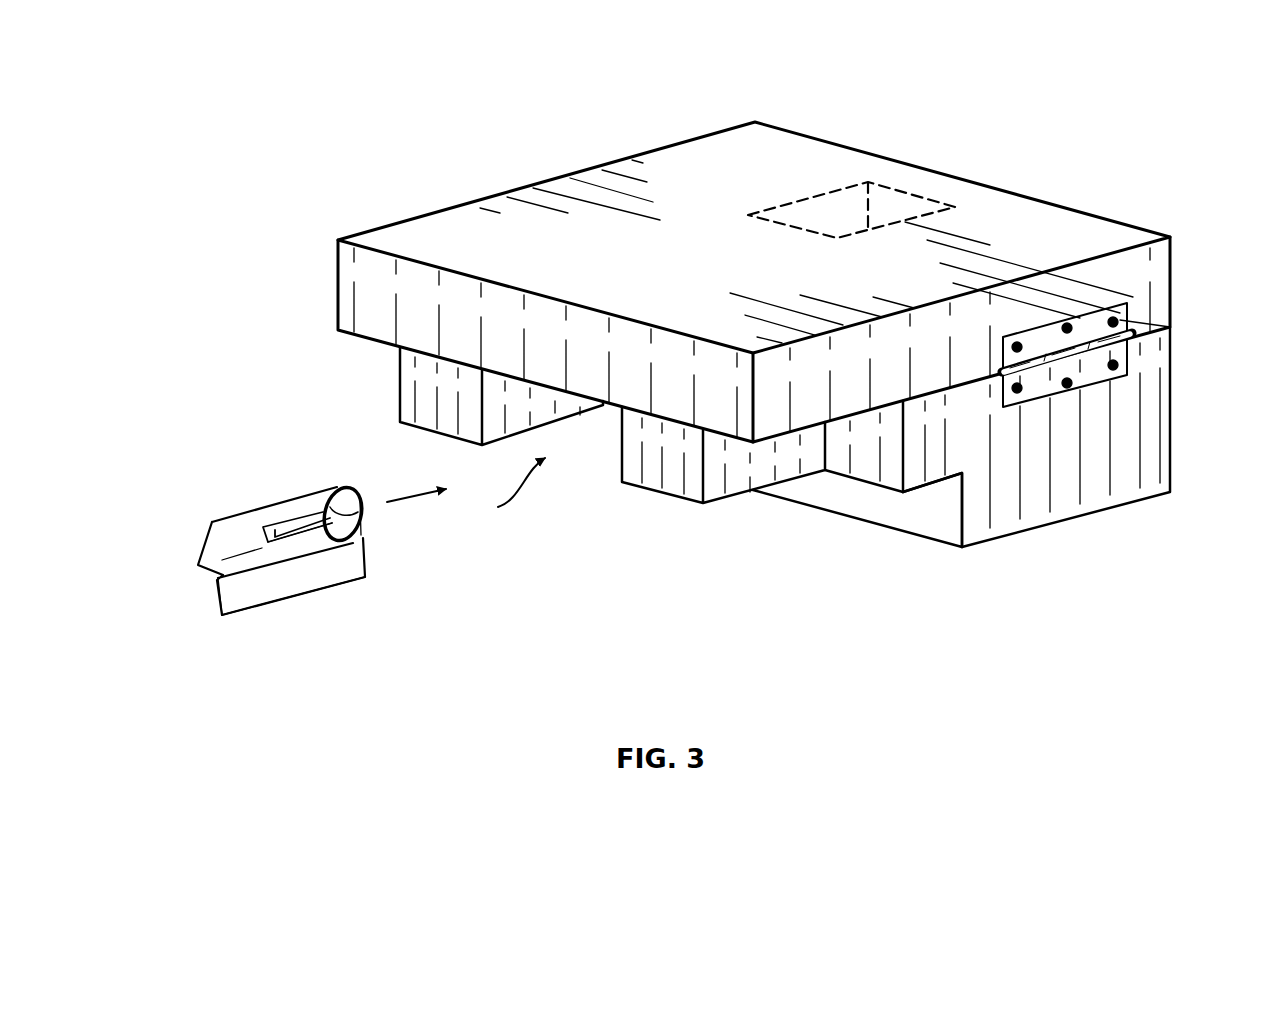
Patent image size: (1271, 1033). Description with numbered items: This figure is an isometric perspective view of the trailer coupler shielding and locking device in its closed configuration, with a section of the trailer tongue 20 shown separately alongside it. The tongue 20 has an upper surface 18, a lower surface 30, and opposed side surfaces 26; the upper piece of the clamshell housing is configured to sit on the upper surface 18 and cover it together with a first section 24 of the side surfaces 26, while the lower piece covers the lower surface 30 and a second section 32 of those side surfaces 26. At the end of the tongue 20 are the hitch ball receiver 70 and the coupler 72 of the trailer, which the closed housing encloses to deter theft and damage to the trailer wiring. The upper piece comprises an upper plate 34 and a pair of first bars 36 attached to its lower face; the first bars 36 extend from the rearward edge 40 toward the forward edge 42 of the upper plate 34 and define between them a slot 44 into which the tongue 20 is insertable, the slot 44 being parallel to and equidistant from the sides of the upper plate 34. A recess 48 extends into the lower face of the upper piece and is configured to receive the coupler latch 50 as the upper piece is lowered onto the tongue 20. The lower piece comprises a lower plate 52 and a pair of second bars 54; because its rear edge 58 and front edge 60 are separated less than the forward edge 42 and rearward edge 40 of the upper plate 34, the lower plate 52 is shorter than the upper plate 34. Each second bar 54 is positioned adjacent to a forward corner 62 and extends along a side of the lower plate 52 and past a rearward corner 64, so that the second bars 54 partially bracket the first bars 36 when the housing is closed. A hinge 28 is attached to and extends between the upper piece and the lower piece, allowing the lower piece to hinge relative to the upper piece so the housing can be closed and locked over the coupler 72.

The upper surface 18 is at (242, 541).
The tongue 20 is at (225, 512).
The first section 24 is at (245, 590).
The opposed side surfaces 26 is at (273, 500).
The hinge 28 is at (1078, 370).
The lower surface 30 is at (262, 607).
The second section 32 is at (352, 542).
The upper plate 34 is at (473, 238).
The first bars 36 is at (420, 383).
The rearward edge 40 is at (1172, 268).
The forward edge 42 is at (348, 334).
The slot 44 is at (466, 492).
The recess 48 is at (876, 212).
The coupler latch 50 is at (275, 538).
The lower plate 52 is at (1052, 483).
The second bars 54 is at (918, 468).
The rear edge 58 is at (1173, 450).
The front edge 60 is at (925, 530).
The forward corner 62 is at (964, 470).
The rearward corner 64 is at (1173, 355).
The hitch ball receiver 70 is at (348, 500).
The coupler 72 is at (360, 522).